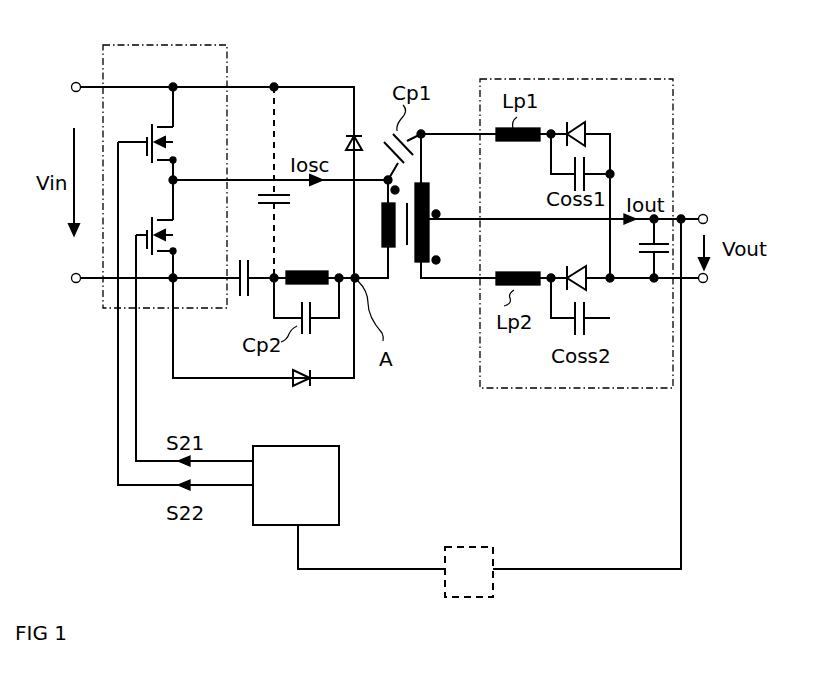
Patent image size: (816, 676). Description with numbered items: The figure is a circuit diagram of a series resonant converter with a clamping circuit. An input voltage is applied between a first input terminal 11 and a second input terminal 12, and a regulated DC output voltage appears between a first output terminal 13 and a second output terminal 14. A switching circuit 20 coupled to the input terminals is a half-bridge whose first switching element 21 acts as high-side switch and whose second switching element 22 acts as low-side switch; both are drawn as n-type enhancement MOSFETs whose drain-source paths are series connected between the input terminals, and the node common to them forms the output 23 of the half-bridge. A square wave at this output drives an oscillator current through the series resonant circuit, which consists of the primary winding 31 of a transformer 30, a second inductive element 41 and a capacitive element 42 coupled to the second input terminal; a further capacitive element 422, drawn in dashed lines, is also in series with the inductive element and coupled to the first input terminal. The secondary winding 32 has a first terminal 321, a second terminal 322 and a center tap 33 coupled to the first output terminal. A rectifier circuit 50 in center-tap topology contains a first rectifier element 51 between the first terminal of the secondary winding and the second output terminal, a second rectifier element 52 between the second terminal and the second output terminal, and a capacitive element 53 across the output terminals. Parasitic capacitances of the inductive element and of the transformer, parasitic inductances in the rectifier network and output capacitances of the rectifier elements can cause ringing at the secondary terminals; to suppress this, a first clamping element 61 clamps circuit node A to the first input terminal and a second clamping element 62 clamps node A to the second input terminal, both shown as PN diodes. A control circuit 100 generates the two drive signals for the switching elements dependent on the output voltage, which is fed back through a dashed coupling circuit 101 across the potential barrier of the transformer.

The first input terminal 11 is at (75, 82).
The second input terminal 12 is at (74, 284).
The first output terminal 13 is at (707, 212).
The second output terminal 14 is at (706, 285).
The switching circuit 20 is at (168, 44).
The first switching element 21 is at (178, 146).
The second switching element 22 is at (178, 238).
The output of the half-bridge circuit 23 is at (227, 182).
The transformer 30 is at (422, 249).
The primary winding 31 is at (381, 221).
The secondary winding 32 is at (435, 203).
The first terminal of the secondary winding 321 is at (433, 183).
The second terminal of the secondary winding 322 is at (422, 283).
The center tap 33 is at (440, 262).
The second inductive element 41 is at (309, 267).
The capacitive element 42 is at (243, 258).
The further capacitive element 422 is at (292, 199).
The rectifier circuit 50 is at (610, 78).
The first rectifier element 51 is at (576, 128).
The second rectifier element 52 is at (572, 268).
The capacitive element 53 is at (643, 264).
The first clamping element 61 is at (340, 140).
The second clamping element 62 is at (300, 389).
The control circuit 100 is at (272, 527).
The coupling circuit 101 is at (462, 600).